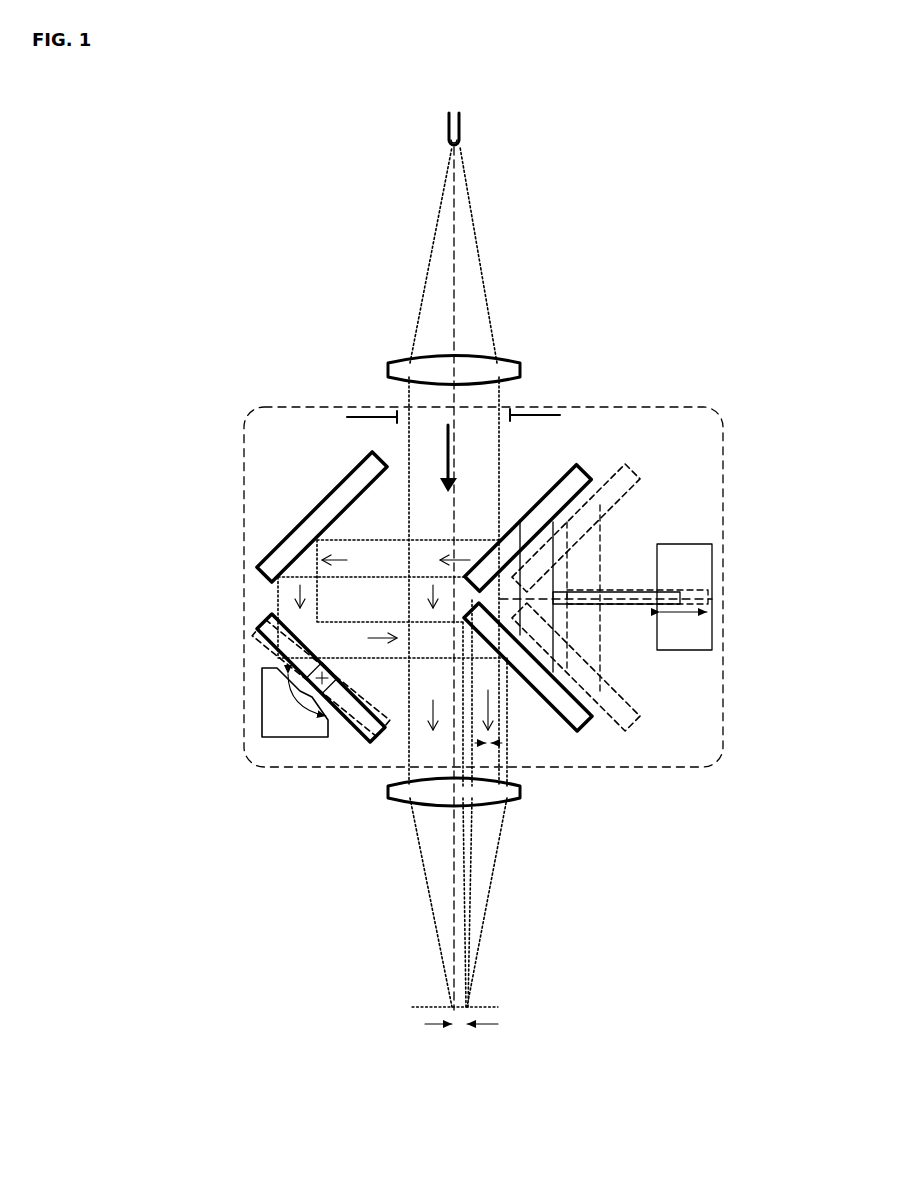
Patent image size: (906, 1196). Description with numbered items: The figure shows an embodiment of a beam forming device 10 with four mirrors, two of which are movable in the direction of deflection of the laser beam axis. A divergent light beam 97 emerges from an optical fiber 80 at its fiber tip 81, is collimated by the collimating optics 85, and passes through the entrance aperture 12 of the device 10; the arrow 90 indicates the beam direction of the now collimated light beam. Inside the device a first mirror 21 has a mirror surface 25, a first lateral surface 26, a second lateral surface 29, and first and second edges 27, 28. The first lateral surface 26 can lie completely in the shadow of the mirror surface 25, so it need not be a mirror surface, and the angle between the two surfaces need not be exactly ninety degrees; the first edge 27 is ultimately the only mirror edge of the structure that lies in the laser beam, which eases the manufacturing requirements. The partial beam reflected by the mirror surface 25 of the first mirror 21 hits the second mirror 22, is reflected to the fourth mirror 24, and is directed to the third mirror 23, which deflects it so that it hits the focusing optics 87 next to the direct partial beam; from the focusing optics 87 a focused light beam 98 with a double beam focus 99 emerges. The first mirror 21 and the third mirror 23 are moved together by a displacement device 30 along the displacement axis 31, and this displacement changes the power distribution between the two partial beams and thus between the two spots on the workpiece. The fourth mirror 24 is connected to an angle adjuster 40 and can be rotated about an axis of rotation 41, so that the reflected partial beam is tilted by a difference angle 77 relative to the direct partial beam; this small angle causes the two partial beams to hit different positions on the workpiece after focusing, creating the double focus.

The beam forming device 10 is at (260, 410).
The entrance aperture 12 is at (508, 410).
The first mirror 21 is at (563, 497).
The second mirror 22 is at (345, 503).
The third mirror 23 is at (565, 703).
The fourth mirror 24 is at (365, 728).
The mirror surface of the first mirror 25 is at (465, 570).
The first lateral surface of the first mirror 26 is at (467, 595).
The first edge of the first mirror 27 is at (525, 508).
The second edge of the first mirror 28 is at (578, 462).
The second lateral surface of the first mirror 29 is at (588, 470).
The displacement device 30 is at (683, 620).
The displacement axis 31 is at (700, 648).
The angle adjuster 40 is at (310, 697).
The axis of rotation 41 is at (300, 662).
The difference angle 77 is at (498, 745).
The optical fiber 80 is at (460, 120).
The fiber tip 81 is at (458, 147).
The collimating optics 85 is at (510, 370).
The focusing optics 87 is at (513, 797).
The light beam 90 is at (445, 425).
The divergent beam 97 is at (468, 292).
The focused beam 98 is at (483, 877).
The beam focus 99 is at (467, 1005).